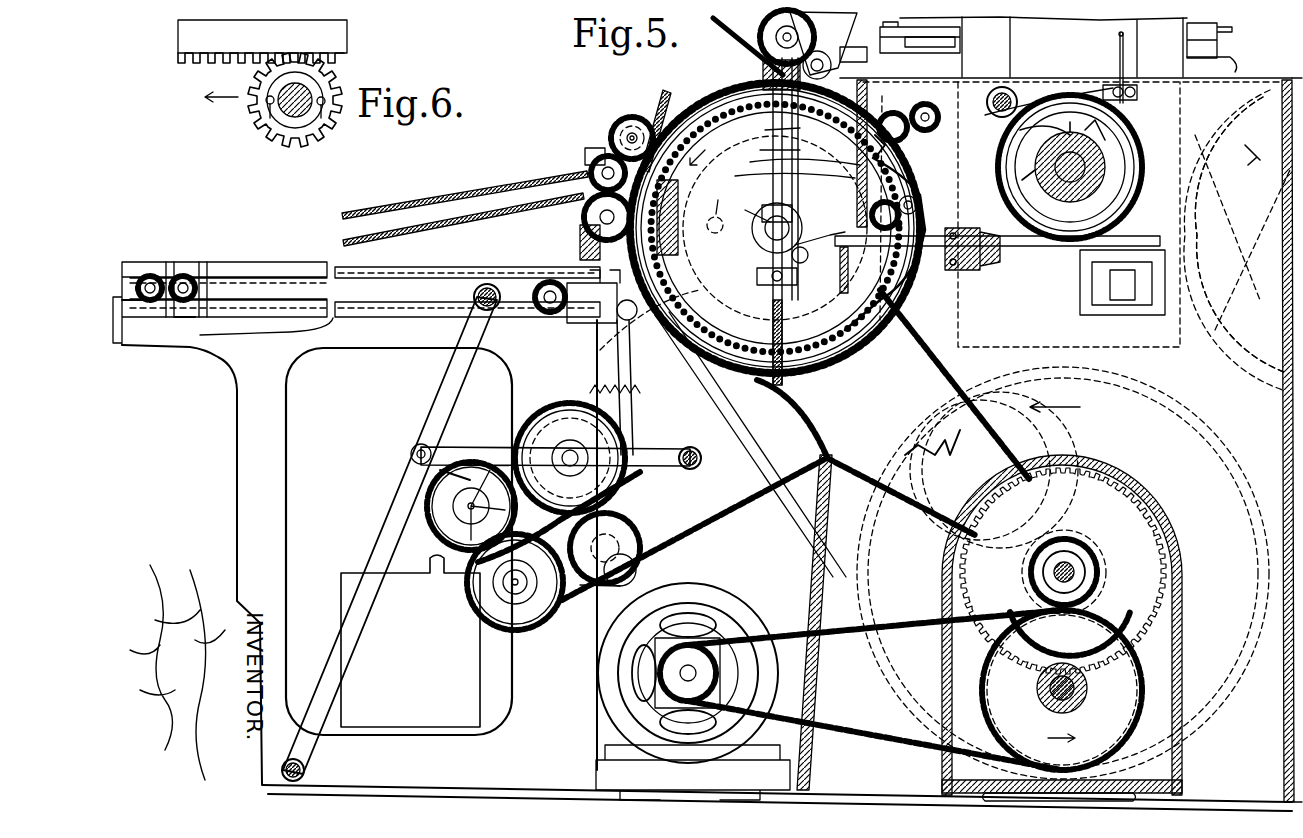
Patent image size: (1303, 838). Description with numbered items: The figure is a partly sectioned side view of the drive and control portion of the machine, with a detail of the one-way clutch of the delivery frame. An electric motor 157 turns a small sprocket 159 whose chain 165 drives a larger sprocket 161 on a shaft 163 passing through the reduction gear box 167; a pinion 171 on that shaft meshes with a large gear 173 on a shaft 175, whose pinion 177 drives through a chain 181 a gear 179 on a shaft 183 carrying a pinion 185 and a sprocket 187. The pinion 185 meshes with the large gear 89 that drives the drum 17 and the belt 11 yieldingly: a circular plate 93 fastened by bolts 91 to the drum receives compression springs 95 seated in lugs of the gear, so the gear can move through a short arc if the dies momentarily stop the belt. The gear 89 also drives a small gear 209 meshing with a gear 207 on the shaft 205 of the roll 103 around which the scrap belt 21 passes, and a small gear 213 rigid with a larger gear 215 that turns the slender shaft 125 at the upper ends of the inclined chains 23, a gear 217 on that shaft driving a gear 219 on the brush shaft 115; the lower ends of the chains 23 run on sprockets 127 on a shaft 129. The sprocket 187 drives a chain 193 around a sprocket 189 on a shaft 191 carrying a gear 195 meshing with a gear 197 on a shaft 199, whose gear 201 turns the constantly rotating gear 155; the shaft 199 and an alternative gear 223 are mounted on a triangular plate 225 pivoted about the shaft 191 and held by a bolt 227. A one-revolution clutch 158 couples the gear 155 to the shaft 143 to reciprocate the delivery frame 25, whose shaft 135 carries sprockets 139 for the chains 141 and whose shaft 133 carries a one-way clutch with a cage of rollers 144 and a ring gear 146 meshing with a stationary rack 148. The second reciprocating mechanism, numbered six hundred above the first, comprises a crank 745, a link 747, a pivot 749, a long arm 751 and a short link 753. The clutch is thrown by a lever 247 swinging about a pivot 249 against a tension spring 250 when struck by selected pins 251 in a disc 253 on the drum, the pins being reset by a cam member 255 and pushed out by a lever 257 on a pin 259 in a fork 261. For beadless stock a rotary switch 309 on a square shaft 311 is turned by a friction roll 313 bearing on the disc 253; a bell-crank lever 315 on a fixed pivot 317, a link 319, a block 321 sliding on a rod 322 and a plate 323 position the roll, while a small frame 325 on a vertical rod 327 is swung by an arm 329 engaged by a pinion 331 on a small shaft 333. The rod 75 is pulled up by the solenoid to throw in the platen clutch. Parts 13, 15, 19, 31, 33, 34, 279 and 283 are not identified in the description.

In FIG. 5, the belt 11 is at (1240, 610).
In FIG. 5, the drum 13 is at (1205, 458).
In FIG. 5, the guide 15 is at (1284, 100).
In FIG. 5, the drum 17 is at (650, 125).
In FIG. 5, the bracket 19 is at (945, 40).
In FIG. 5, the belt 21 is at (725, 30).
In FIG. 5, the inclined chains 23 is at (445, 210).
In FIG. 5, the delivery frame 25 is at (420, 300).
In FIG. 5, the bracket 31 is at (1223, 60).
In FIG. 5, the block 33 is at (1236, 38).
In FIG. 5, the wheel 34 is at (1050, 190).
In FIG. 5, the rod 75 is at (1118, 46).
In FIG. 5, the large gear 89 is at (700, 360).
In FIG. 5, the bolts 91 is at (717, 199).
In FIG. 5, the circular plate 93 is at (745, 300).
In FIG. 5, the compression springs 95 is at (685, 219).
In FIG. 5, the roll 103 is at (778, 22).
In FIG. 5, the brush shaft 115 is at (634, 134).
In FIG. 5, the slender shaft 125 is at (583, 150).
In FIG. 5, the sprockets 127 is at (186, 300).
In FIG. 5, the slender shaft 129 is at (188, 276).
In FIG. 6, the shaft 133 is at (299, 116).
In FIG. 5, the shaft 133 is at (550, 312).
In FIG. 5, the shaft 135 is at (148, 300).
In FIG. 5, the sprockets 139 is at (145, 262).
In FIG. 5, the chains 141 is at (152, 275).
In FIG. 5, the shaft 143 is at (555, 418).
In FIG. 6, the rollers 144 is at (323, 107).
In FIG. 6, the ring gear 146 is at (338, 85).
In FIG. 6, the stationary rack 148 is at (347, 25).
In FIG. 5, the stationary rack 148 is at (470, 285).
In FIG. 5, the gear 155 is at (570, 410).
In FIG. 5, the electric motor 157 is at (730, 605).
In FIG. 5, the one-revolution clutch 158 is at (600, 392).
In FIG. 5, the small sprocket 159 is at (670, 685).
In FIG. 5, the larger sprocket 161 is at (1105, 730).
In FIG. 5, the shaft 163 is at (1060, 688).
In FIG. 5, the chain 165 is at (835, 735).
In FIG. 5, the gear box 167 is at (942, 580).
In FIG. 5, the pinion 171 is at (1088, 688).
In FIG. 5, the large gear 173 is at (1150, 572).
In FIG. 5, the shaft 175 is at (1072, 580).
In FIG. 5, the pinion 177 is at (1090, 558).
In FIG. 5, the gear 179 is at (930, 420).
In FIG. 5, the chain 181 is at (1010, 440).
In FIG. 5, the shaft 183 is at (885, 455).
In FIG. 5, the pinion 185 is at (915, 445).
In FIG. 5, the sprocket 187 is at (800, 396).
In FIG. 5, the sprocket 189 is at (505, 615).
In FIG. 5, the shaft 191 is at (500, 600).
In FIG. 5, the chain 193 is at (762, 505).
In FIG. 5, the gear 195 is at (510, 600).
In FIG. 5, the gear 197 is at (430, 498).
In FIG. 5, the shaft 199 is at (455, 507).
In FIG. 5, the gear 201 is at (435, 475).
In FIG. 5, the shaft 205 is at (790, 60).
In FIG. 5, the gear 207 is at (775, 50).
In FIG. 5, the small gear 209 is at (875, 55).
In FIG. 5, the small gear 213 is at (578, 232).
In FIG. 5, the larger gear 215 is at (580, 213).
In FIG. 5, the gear 217 is at (588, 185).
In FIG. 5, the gear 219 is at (630, 125).
In FIG. 5, the gear 223 is at (628, 540).
In FIG. 5, the triangular plate 225 is at (462, 528).
In FIG. 5, the bolt 227 is at (621, 572).
In FIG. 5, the lever 247 is at (632, 402).
In FIG. 5, the pivot 249 is at (680, 340).
In FIG. 5, the tension spring 250 is at (580, 440).
In FIG. 5, the pins 251 is at (775, 228).
In FIG. 5, the disc 253 is at (705, 368).
In FIG. 5, the stationary cam member 255 is at (765, 250).
In FIG. 5, the lever 257 is at (771, 290).
In FIG. 5, the pin 259 is at (792, 334).
In FIG. 5, the fork 261 is at (765, 270).
In FIG. 5, the gear 279 is at (876, 208).
In FIG. 5, the shaft 283 is at (940, 232).
In FIG. 5, the rotary switch 309 is at (762, 74).
In FIG. 5, the square shaft 311 is at (770, 151).
In FIG. 5, the friction roll 313 is at (722, 222).
In FIG. 5, the bell-crank lever 315 is at (895, 282).
In FIG. 5, the fixed pivot 317 is at (918, 203).
In FIG. 5, the link 319 is at (808, 264).
In FIG. 5, the sliding block 321 is at (781, 172).
In FIG. 5, the rod 322 is at (766, 129).
In FIG. 5, the plate 323 is at (759, 207).
In FIG. 5, the small frame 325 is at (867, 120).
In FIG. 5, the small vertical rod 327 is at (798, 162).
In FIG. 5, the arm 329 is at (903, 115).
In FIG. 5, the pinion 331 is at (930, 108).
In FIG. 5, the small shaft 333 is at (938, 120).
In FIG. 5, the crank 745 is at (686, 468).
In FIG. 5, the link 747 is at (498, 447).
In FIG. 5, the pivot 749 is at (420, 445).
In FIG. 5, the long arm 751 is at (368, 562).
In FIG. 5, the short link 753 is at (493, 308).